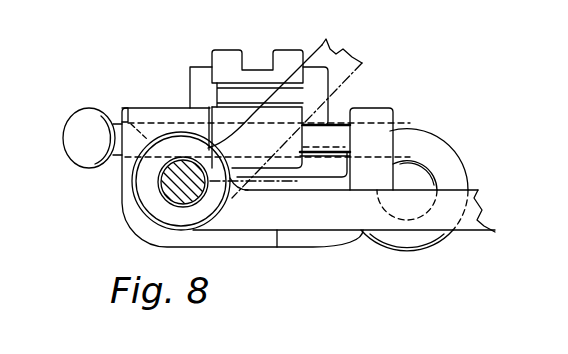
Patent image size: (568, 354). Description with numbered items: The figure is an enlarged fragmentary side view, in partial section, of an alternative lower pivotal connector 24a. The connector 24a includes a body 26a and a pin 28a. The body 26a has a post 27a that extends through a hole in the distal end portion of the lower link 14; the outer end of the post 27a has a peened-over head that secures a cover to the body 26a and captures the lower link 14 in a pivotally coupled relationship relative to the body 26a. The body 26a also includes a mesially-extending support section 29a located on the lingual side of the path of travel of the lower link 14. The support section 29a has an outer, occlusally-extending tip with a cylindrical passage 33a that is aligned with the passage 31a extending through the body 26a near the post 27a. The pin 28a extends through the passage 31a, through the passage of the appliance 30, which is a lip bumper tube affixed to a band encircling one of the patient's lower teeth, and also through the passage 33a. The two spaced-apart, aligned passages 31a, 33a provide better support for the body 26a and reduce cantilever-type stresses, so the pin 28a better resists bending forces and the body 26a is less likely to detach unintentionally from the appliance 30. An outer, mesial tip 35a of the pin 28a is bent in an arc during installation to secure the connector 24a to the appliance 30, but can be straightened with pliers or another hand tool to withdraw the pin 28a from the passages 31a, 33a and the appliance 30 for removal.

The lower link 14 is at (362, 63).
The lower pivotal connector 24a is at (314, 270).
The body 26a is at (135, 218).
The post 27a is at (170, 195).
The pin 28a is at (77, 142).
The support section 29a is at (393, 108).
The appliance 30 is at (211, 62).
The passage 31a is at (126, 107).
The cylindrical passage 33a is at (379, 157).
The mesial tip 35a is at (463, 166).